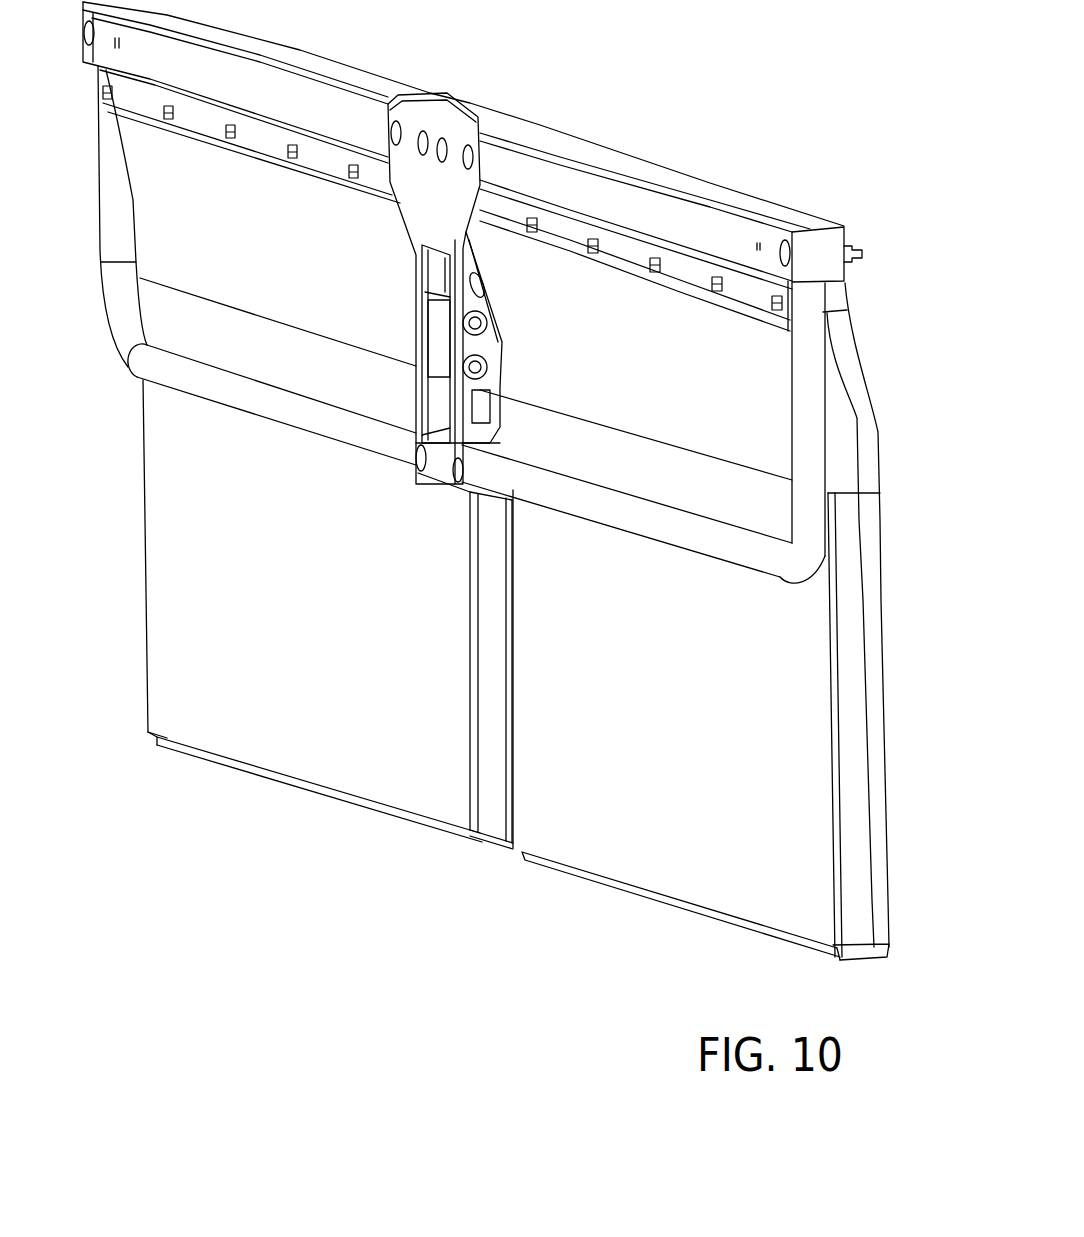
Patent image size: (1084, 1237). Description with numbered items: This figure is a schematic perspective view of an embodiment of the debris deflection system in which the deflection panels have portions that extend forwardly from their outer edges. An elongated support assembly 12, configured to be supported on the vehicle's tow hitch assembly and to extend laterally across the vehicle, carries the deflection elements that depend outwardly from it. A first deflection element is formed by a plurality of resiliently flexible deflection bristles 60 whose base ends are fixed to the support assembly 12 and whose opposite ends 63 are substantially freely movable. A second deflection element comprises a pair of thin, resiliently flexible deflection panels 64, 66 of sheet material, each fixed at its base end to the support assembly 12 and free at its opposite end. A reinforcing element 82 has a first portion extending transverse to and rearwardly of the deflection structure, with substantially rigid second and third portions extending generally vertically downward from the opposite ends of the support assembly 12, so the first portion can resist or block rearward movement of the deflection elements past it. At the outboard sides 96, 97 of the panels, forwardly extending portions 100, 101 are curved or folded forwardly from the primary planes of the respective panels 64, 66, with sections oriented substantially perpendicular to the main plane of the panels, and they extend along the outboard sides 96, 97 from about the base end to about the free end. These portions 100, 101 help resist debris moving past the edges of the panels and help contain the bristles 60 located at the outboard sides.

The support assembly 12 is at (570, 150).
The reinforcing element 82 is at (808, 372).
The forwardly extending portion 100 is at (146, 625).
The forwardly extending portion 101 is at (880, 727).
The outboard side 96 is at (141, 756).
The deflection panel 64 is at (323, 737).
The deflection bristles 60 is at (402, 820).
The ends of the bristles 63 is at (542, 867).
The deflection panel 66 is at (600, 835).
The outboard side 97 is at (875, 970).